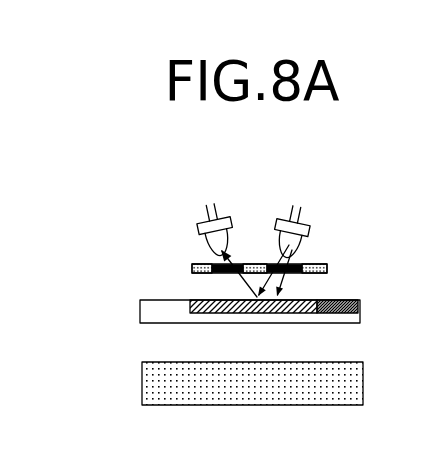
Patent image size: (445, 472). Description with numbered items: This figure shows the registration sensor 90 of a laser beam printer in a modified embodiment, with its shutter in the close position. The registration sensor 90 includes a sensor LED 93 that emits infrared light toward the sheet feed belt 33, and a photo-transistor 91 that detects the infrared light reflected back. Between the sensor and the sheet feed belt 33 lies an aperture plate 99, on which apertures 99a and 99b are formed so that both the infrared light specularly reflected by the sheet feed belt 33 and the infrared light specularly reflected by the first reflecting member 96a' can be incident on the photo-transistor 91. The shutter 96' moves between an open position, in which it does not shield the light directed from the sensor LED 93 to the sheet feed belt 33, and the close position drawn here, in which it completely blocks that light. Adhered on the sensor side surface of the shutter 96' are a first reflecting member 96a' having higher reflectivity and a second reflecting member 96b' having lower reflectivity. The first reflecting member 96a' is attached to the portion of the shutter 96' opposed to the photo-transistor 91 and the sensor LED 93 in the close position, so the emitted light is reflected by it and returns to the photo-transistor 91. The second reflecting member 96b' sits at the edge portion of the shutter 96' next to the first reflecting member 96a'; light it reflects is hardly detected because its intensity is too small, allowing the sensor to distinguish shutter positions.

The registration sensor 90 is at (319, 215).
The photo-transistor 91 is at (207, 241).
The sensor LED 93 is at (302, 246).
The aperture plate 99 is at (322, 264).
The aperture 99a is at (295, 277).
The aperture 99b is at (209, 279).
The shutter 96' is at (252, 310).
The first reflecting member 96a' is at (219, 290).
The second reflecting member 96b' is at (368, 293).
The sheet feed belt 33 is at (331, 362).